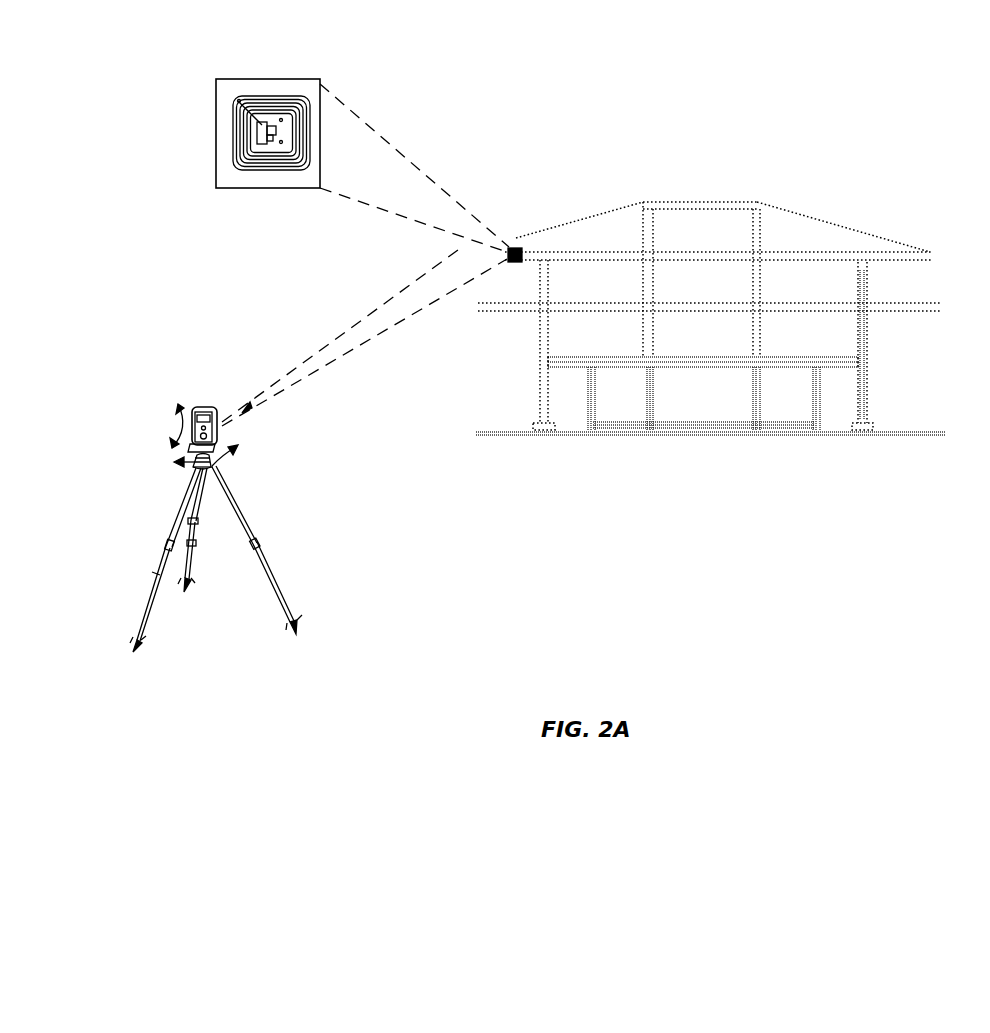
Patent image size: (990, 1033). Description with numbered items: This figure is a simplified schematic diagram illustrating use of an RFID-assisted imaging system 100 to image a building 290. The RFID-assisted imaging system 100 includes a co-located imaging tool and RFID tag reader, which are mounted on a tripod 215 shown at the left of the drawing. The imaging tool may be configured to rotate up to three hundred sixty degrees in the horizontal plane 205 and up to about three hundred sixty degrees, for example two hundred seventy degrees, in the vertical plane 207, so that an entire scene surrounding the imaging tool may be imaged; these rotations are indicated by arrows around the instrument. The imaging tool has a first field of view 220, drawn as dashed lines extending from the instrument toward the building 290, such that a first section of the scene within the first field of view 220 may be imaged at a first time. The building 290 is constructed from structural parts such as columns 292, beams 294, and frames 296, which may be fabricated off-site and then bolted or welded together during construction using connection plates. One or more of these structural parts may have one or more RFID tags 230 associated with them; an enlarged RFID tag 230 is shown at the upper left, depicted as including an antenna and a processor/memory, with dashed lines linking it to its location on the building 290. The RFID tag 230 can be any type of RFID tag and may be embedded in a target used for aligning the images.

The RFID-assisted imaging system 100 is at (203, 405).
The horizontal plane 205 is at (224, 468).
The vertical plane 207 is at (182, 424).
The tripod 215 is at (262, 548).
The first field of view 220 is at (285, 378).
The RFID tag 230 is at (290, 80).
The building 290 is at (722, 275).
The columns 292 is at (863, 332).
The beams 294 is at (890, 256).
The frames 296 is at (817, 388).